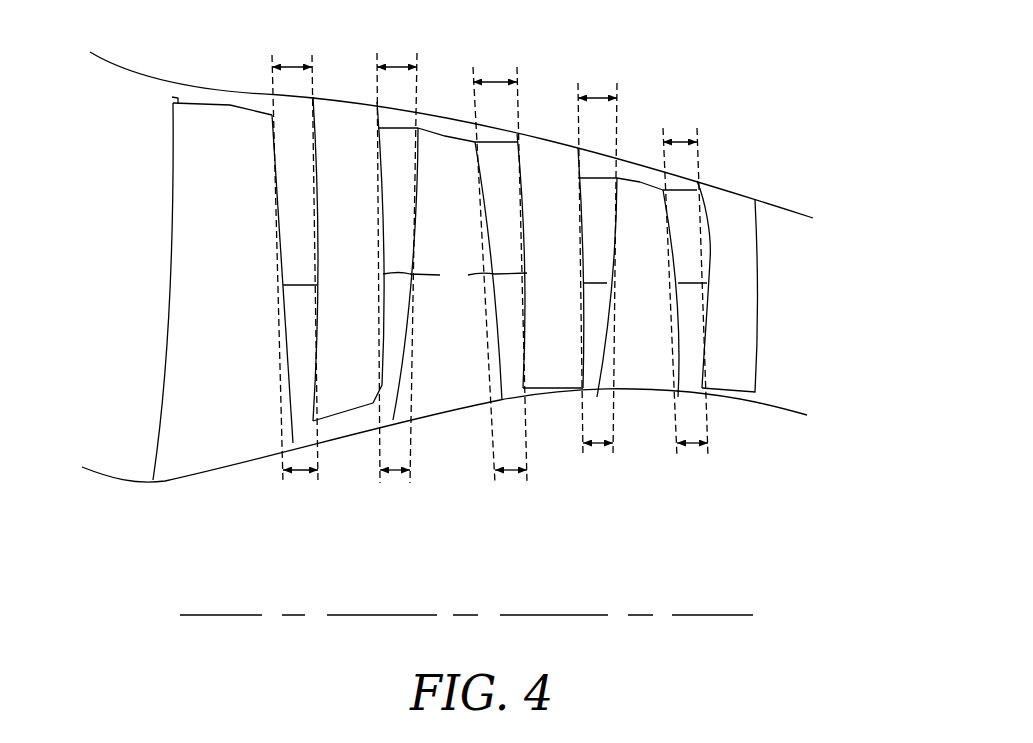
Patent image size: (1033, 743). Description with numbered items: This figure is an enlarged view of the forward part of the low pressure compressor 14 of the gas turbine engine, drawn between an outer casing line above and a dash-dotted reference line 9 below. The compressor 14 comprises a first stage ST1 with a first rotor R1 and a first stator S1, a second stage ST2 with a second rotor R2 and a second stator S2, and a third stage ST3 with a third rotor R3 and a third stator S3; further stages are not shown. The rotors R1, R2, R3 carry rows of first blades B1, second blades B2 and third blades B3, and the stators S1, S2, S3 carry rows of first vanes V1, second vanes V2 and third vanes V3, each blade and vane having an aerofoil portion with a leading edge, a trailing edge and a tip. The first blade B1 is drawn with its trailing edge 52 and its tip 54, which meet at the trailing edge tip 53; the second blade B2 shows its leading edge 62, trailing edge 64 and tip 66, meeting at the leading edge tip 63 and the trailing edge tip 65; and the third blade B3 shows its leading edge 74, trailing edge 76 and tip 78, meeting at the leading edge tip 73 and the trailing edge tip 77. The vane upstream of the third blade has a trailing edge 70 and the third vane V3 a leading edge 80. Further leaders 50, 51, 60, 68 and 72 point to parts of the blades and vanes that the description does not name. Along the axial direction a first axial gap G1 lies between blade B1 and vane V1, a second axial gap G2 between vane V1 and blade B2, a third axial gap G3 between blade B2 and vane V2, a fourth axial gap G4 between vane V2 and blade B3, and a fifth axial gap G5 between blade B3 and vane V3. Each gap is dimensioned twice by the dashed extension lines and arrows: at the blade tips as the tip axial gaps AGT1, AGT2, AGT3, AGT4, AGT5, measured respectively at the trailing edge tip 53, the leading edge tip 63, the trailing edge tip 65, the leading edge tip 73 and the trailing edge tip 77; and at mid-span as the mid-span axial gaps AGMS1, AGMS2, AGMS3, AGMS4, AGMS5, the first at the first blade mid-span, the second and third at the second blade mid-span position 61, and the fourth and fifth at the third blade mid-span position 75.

The low pressure compressor 14 is at (82, 100).
The engine central axis 9 is at (223, 615).
The first stage rotor blade 50 is at (167, 328).
The blade inner platform 51 is at (283, 285).
The trailing edge of first blade 52 is at (277, 197).
The first blade trailing edge tip 53 is at (267, 115).
The tip of first blade 54 is at (172, 97).
The first stage vane inner platform 60 is at (340, 418).
The second blade mid-span position 61 is at (455, 279).
The leading edge of second blade 62 is at (415, 230).
The second blade leading edge tip 63 is at (422, 137).
The trailing edge of second blade 64 is at (490, 302).
The second blade trailing edge tip 65 is at (475, 142).
The tip of second blade 66 is at (440, 117).
The second stage vane leading edge 68 is at (527, 180).
The vane trailing edge 70 is at (580, 220).
The second stage vane inner platform 72 is at (540, 388).
The third blade leading edge tip 73 is at (618, 178).
The leading edge of third blade 74 is at (615, 242).
The third blade mid-span position 75 is at (672, 284).
The trailing edge of third blade 76 is at (677, 267).
The third blade trailing edge tip 77 is at (663, 190).
The tip of third blade 78 is at (638, 178).
The leading edge of third vane 80 is at (710, 253).
The first rotor R1 is at (137, 173).
The second rotor R2 is at (448, 425).
The third rotor R3 is at (642, 412).
The first stator S1 is at (338, 88).
The second stator S2 is at (553, 419).
The third stator S3 is at (750, 182).
The first stage ST1 is at (270, 472).
The second stage ST2 is at (528, 108).
The third stage ST3 is at (706, 174).
The first blade B1 is at (225, 427).
The second blade B2 is at (460, 397).
The third blade B3 is at (653, 376).
The first vane V1 is at (360, 374).
The second vane V2 is at (563, 311).
The third vane V3 is at (743, 364).
The first axial gap G1 is at (296, 276).
The second axial gap G2 is at (396, 276).
The third axial gap G3 is at (509, 285).
The fourth axial gap G4 is at (599, 284).
The fifth axial gap G5 is at (698, 304).
The first tip axial gap AGT1 is at (290, 64).
The second tip axial gap AGT2 is at (397, 64).
The third tip axial gap AGT3 is at (493, 80).
The fourth tip axial gap AGT4 is at (597, 96).
The fifth tip axial gap AGT5 is at (680, 140).
The first mid-span axial gap AGMS1 is at (297, 473).
The second mid-span axial gap AGMS2 is at (393, 473).
The third mid-span axial gap AGMS3 is at (508, 473).
The fourth mid-span axial gap AGMS4 is at (595, 446).
The fifth mid-span axial gap AGMS5 is at (690, 446).